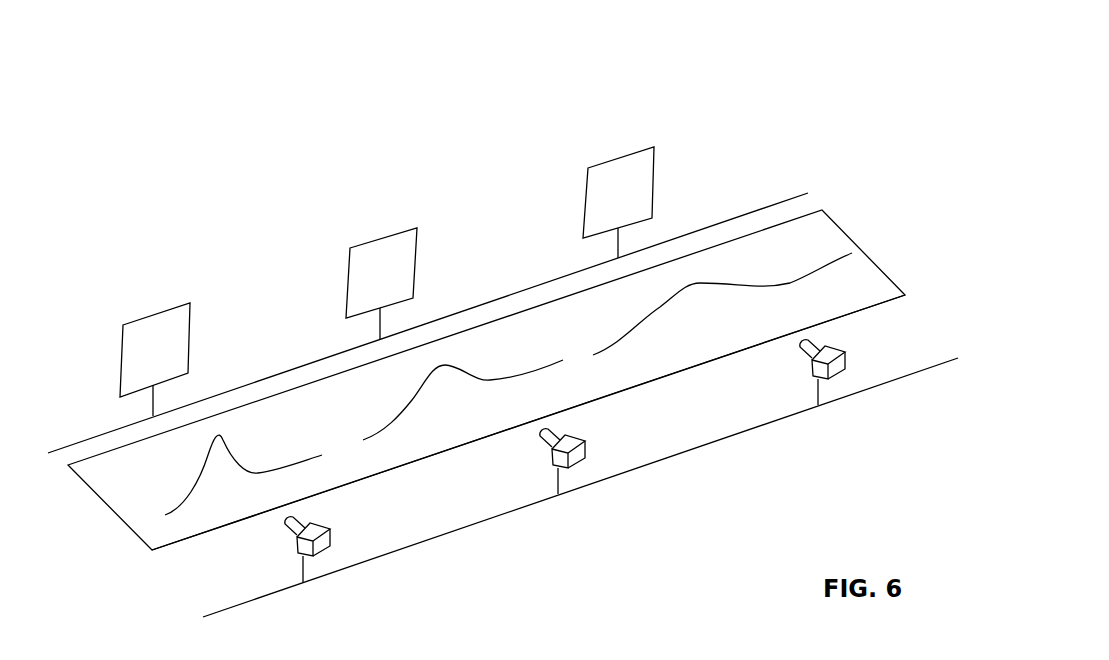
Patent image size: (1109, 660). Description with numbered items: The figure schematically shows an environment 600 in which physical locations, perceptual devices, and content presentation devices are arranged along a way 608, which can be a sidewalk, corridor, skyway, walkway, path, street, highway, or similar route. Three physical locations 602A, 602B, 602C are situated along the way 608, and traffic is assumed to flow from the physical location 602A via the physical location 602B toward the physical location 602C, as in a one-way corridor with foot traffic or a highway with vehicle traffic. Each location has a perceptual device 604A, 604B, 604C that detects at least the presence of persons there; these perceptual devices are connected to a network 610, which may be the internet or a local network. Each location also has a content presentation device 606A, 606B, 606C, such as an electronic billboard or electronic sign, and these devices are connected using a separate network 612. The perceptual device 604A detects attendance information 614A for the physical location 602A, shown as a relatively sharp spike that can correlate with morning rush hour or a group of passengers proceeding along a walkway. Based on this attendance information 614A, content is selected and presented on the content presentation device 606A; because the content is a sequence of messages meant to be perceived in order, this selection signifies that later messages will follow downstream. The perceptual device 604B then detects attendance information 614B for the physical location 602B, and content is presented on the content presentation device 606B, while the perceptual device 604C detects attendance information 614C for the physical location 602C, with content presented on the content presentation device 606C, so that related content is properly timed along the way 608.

The environment 600 is at (176, 166).
The physical location 602A is at (218, 528).
The physical location 602B is at (458, 447).
The physical location 602C is at (702, 364).
The perceptual device 604A is at (328, 527).
The perceptual device 604B is at (582, 440).
The perceptual device 604C is at (812, 379).
The content presentation device 606A is at (158, 313).
The content presentation device 606B is at (383, 238).
The content presentation device 606C is at (620, 158).
The way 608 is at (848, 235).
The network 610 is at (435, 538).
The network 612 is at (265, 378).
The attendance information 614A is at (232, 437).
The attendance information 614B is at (448, 366).
The attendance information 614C is at (697, 283).